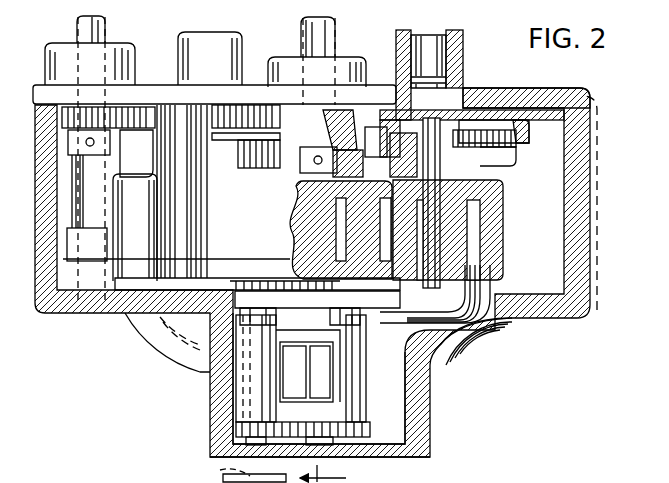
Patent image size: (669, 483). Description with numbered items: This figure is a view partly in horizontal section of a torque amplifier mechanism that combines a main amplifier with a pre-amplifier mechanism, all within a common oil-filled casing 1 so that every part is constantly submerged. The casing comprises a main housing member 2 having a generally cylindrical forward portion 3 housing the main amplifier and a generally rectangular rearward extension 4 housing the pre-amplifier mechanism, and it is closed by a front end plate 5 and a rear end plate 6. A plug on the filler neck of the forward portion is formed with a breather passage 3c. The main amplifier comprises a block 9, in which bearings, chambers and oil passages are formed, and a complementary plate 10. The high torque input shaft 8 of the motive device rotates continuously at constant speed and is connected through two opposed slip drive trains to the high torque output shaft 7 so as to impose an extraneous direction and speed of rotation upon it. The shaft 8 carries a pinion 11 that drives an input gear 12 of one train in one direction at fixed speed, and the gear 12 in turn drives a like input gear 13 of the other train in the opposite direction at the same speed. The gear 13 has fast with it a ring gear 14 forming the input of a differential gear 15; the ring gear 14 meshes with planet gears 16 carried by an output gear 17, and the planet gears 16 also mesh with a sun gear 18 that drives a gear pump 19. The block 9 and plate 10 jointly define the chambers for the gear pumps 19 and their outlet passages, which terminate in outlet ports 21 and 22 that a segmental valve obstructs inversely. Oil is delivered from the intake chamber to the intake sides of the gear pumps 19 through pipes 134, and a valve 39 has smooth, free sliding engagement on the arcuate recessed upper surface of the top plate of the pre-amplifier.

The casing 1 is at (63, 35).
The main housing member 2 is at (606, 211).
The cylindrical forward portion 3 is at (583, 244).
The breather passage 3c is at (235, 477).
The rectangular rearward extension 4 is at (425, 407).
The front end plate 5 is at (511, 92).
The rear end plate 6 is at (432, 452).
The high torque output shaft 7 is at (335, 33).
The high torque input shaft 8 is at (100, 32).
The block 9 is at (489, 236).
The complementary plate 10 is at (133, 268).
The pinion 11 is at (143, 137).
The input gear 12 is at (138, 153).
The input gear 13 is at (523, 138).
The ring gear 14 is at (521, 142).
The differential gear 15 is at (520, 158).
The planet gears 16 is at (388, 116).
The output gear 17 is at (499, 175).
The sun gear 18 is at (458, 117).
The gear pump 19 is at (476, 246).
The outlet port 21 is at (353, 203).
The outlet port 22 is at (350, 250).
The valve 39 is at (296, 379).
The pipes 134 is at (187, 325).